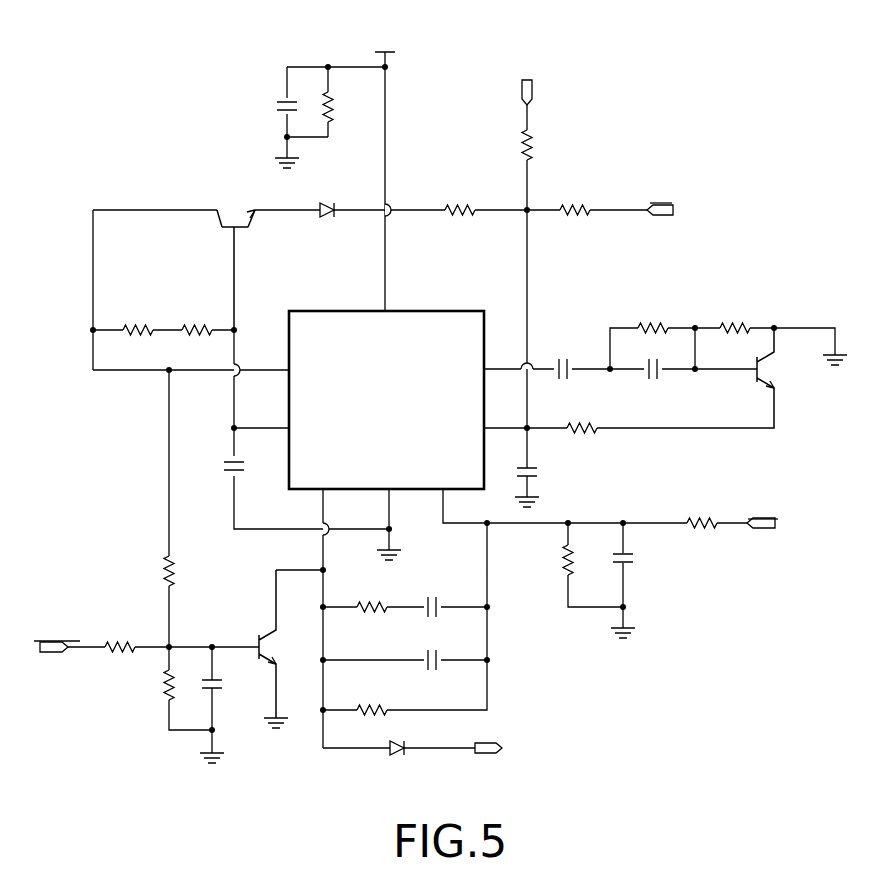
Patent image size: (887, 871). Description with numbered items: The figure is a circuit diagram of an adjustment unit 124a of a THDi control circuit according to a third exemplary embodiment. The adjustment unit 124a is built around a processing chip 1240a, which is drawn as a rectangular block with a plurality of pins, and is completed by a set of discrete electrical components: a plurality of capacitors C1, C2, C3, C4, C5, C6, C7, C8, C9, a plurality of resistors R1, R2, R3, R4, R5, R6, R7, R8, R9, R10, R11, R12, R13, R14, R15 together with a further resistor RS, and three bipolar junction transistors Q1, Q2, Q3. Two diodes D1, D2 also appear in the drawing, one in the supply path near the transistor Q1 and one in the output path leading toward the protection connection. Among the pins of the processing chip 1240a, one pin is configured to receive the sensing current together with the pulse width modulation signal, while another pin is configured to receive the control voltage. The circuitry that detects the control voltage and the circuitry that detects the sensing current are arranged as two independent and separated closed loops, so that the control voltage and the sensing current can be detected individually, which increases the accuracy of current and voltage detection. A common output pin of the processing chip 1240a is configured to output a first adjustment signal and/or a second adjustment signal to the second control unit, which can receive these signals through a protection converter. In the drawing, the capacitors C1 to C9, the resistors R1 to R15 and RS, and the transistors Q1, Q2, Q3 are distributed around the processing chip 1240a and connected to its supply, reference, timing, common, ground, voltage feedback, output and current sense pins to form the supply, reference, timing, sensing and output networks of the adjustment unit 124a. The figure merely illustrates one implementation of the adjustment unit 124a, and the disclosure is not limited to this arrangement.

The adjustment unit 124a is at (773, 35).
The processing chip 1240a is at (318, 311).
The bipolar junction transistor Q1 is at (236, 254).
The bipolar junction transistor Q2 is at (703, 378).
The bipolar junction transistor Q3 is at (285, 644).
The diode D1 is at (330, 198).
The diode D2 is at (399, 762).
The resistor R1 is at (345, 102).
The resistor R2 is at (460, 197).
The resistor R3 is at (575, 196).
The resistor R4 is at (138, 317).
The resistor R5 is at (197, 317).
The resistor R6 is at (653, 312).
The resistor R7 is at (734, 312).
The resistor R8 is at (582, 416).
The resistor R9 is at (152, 508).
The resistor R10 is at (373, 594).
The resistor R11 is at (569, 565).
The resistor R12 is at (703, 510).
The resistor R13 is at (124, 635).
The resistor R14 is at (163, 688).
The resistor R15 is at (373, 698).
The resistor RS is at (509, 145).
The capacitor C1 is at (270, 102).
The capacitor C2 is at (562, 356).
The capacitor C3 is at (654, 382).
The capacitor C4 is at (224, 479).
The capacitor C5 is at (545, 462).
The capacitor C6 is at (640, 575).
The capacitor C7 is at (429, 594).
The capacitor C8 is at (412, 651).
The capacitor C9 is at (230, 700).